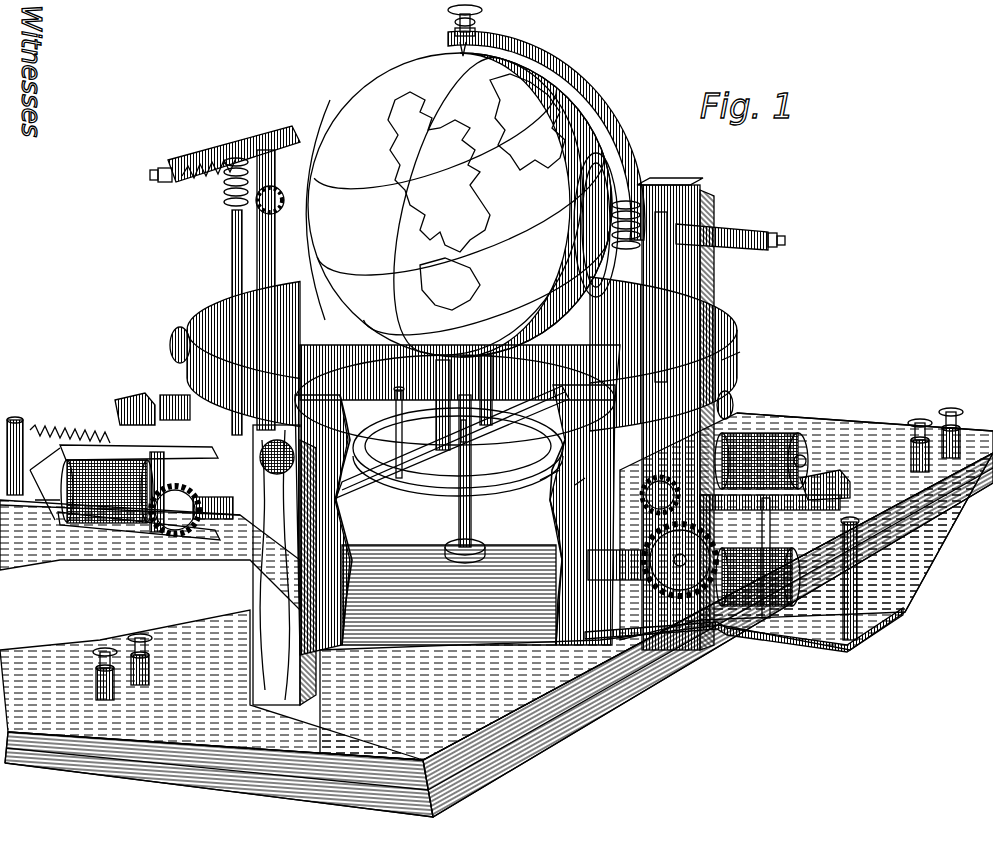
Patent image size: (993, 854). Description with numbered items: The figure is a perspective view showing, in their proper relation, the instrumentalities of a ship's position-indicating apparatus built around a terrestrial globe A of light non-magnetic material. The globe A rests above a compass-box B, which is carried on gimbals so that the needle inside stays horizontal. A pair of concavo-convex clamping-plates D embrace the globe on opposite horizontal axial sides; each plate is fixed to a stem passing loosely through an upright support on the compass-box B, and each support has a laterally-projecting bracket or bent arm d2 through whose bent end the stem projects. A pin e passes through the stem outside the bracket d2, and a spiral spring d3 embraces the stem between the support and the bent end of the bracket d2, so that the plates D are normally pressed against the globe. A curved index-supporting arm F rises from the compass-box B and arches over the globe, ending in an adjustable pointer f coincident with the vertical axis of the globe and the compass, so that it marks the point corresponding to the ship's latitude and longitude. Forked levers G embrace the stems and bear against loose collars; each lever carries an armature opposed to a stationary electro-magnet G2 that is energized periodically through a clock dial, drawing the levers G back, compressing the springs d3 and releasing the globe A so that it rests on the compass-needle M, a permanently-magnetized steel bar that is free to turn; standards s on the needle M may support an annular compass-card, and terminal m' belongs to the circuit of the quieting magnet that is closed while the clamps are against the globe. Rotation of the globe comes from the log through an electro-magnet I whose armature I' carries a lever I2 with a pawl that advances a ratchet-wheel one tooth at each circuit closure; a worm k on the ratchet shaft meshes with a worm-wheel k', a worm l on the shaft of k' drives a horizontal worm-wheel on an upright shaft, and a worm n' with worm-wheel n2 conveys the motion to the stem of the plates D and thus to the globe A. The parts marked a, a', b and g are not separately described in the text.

The terrestrial globe A is at (467, 213).
The compass-box B is at (496, 581).
The clamping-plates D is at (345, 146).
The index-supporting arm F is at (618, 102).
The pointer f is at (470, 50).
The forked levers G is at (232, 244).
The electro-magnet G2 is at (170, 360).
The electro-magnet I is at (120, 497).
The armature I' is at (754, 542).
The lever I2 is at (118, 420).
The compass-needle M is at (452, 442).
The adjusting nut a is at (484, 202).
The standard rod a' is at (674, 414).
The pin b is at (653, 415).
The brackets d2 is at (262, 148).
The spiral springs d3 is at (215, 188).
The pins e is at (800, 214).
The pinion g is at (676, 480).
The worm k is at (652, 560).
The worm-wheel k' is at (231, 565).
The worm l is at (578, 487).
The terminal m' is at (458, 467).
The worm n' is at (223, 198).
The worm-wheel n2 is at (284, 281).
The standards s is at (397, 430).